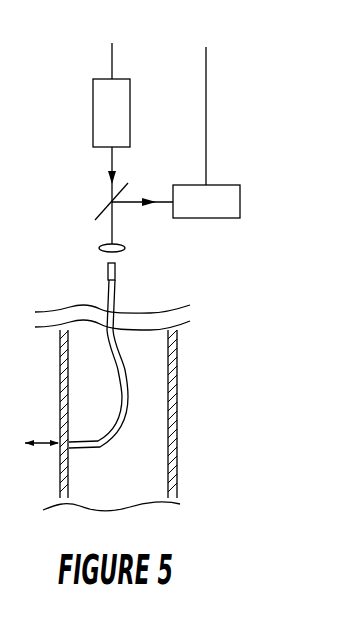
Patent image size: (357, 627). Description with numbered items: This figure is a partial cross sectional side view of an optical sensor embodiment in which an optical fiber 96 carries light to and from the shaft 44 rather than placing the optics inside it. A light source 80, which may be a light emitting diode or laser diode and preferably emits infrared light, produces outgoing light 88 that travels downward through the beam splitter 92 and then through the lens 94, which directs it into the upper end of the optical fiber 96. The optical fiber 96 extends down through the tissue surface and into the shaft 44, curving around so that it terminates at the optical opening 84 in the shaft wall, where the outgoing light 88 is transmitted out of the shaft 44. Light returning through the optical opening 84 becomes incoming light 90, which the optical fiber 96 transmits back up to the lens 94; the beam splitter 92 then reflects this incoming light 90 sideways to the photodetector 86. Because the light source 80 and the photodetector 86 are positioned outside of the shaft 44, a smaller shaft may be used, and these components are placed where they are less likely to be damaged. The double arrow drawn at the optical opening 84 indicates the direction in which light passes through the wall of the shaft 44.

The light source 80 is at (123, 115).
The outgoing light 88 is at (112, 165).
The beam splitter 92 is at (110, 204).
The incoming light 90 is at (132, 204).
The photodetector 86 is at (220, 193).
The lens 94 is at (100, 246).
The optical fiber 96 is at (113, 305).
The shaft 44 is at (177, 377).
The optical opening 84 is at (61, 452).